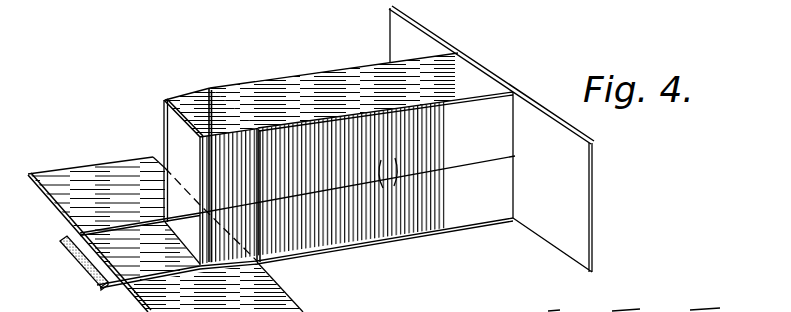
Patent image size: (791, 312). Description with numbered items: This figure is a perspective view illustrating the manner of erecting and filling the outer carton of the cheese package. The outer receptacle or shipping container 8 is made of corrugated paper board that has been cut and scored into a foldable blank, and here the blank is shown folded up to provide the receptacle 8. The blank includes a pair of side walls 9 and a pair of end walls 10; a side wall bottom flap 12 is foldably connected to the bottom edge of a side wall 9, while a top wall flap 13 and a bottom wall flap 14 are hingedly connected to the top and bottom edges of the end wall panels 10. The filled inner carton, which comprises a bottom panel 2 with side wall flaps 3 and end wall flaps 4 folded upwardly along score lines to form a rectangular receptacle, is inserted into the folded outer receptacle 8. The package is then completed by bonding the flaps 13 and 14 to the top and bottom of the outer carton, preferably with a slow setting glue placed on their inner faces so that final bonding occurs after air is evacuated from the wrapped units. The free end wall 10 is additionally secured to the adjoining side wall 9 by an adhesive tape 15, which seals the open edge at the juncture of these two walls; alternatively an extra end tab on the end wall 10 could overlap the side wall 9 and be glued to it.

In FIG. 4, the bottom panel 2 is at (283, 257).
In FIG. 4, the side wall flap 3 is at (190, 107).
In FIG. 4, the end wall flap 4 is at (172, 137).
In FIG. 4, the outer container 8 is at (333, 68).
In FIG. 4, the side wall 9 is at (292, 89).
In FIG. 4, the end wall 10 is at (148, 255).
In FIG. 4, the side wall bottom flap 12 is at (493, 142).
In FIG. 4, the top wall flap 13 is at (70, 172).
In FIG. 5, the top wall flap 13 is at (463, 303).
In FIG. 4, the bottom wall flap 14 is at (591, 213).
In FIG. 4, the adhesive tape 15 is at (82, 260).